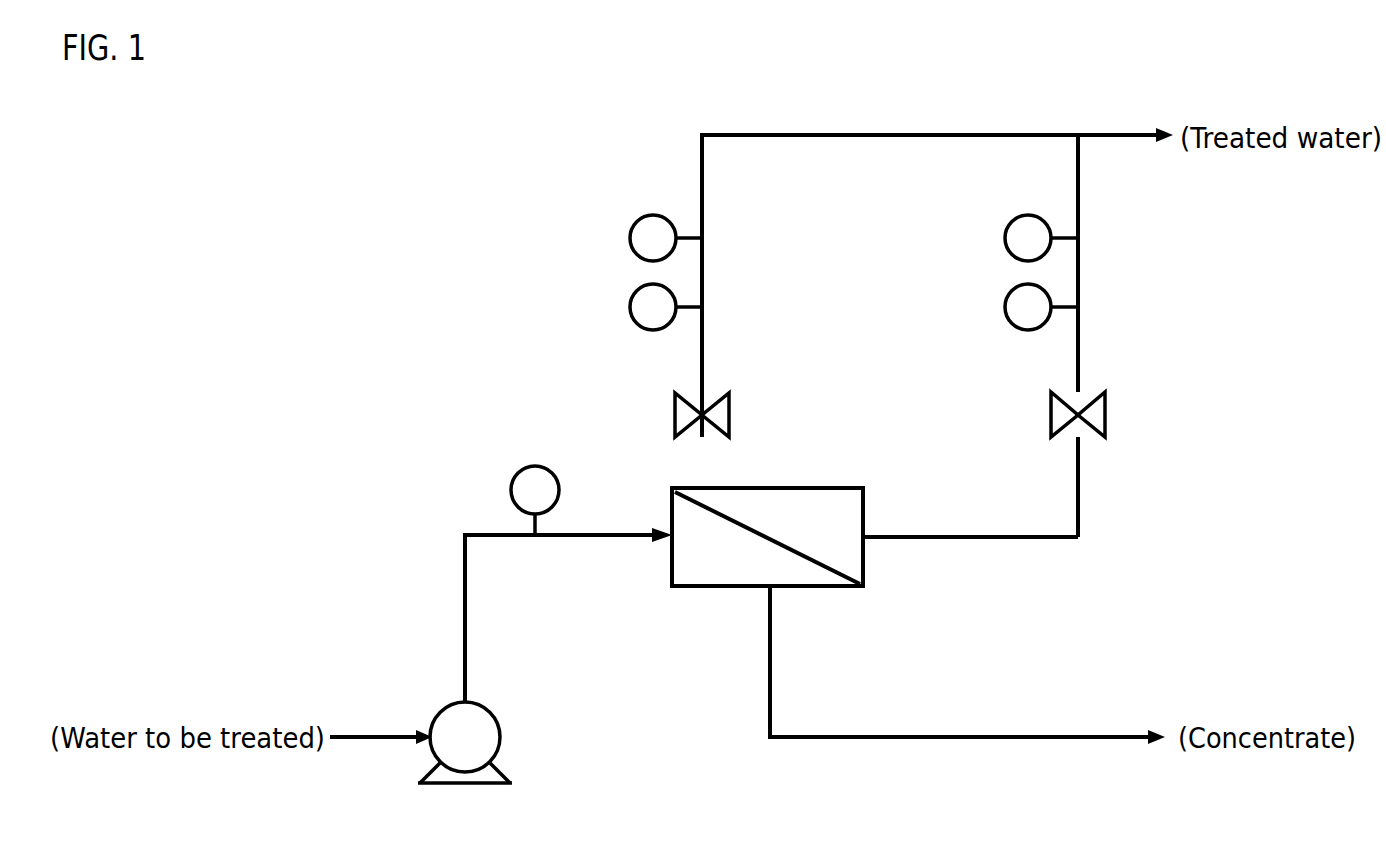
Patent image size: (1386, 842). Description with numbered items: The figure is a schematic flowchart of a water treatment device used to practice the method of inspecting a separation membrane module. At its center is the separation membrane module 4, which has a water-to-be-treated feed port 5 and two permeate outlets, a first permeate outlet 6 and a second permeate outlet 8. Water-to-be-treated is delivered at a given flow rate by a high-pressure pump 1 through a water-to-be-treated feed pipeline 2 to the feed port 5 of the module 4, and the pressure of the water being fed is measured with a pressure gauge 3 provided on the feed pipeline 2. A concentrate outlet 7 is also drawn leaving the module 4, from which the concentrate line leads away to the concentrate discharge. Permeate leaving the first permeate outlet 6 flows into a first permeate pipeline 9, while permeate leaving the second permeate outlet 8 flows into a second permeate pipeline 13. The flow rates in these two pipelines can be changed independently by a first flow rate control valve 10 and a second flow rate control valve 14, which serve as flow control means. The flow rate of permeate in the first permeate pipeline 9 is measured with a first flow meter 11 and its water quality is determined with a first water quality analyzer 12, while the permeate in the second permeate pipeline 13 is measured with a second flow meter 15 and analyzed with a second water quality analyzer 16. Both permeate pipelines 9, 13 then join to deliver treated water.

The high-pressure pump 1 is at (462, 734).
The water-to-be-treated feed pipeline 2 is at (463, 630).
The pressure gauge 3 is at (513, 478).
The separation membrane module 4 is at (752, 502).
The water-to-be-treated feed port 5 is at (658, 518).
The first permeate outlet 6 is at (712, 484).
The concentrate outlet 7 is at (765, 584).
The second permeate outlet 8 is at (868, 542).
The first permeate pipeline 9 is at (708, 372).
The first flow rate control valve 10 is at (680, 428).
The first flow meter 11 is at (630, 312).
The first water quality analyzer 12 is at (630, 234).
The second permeate pipeline 13 is at (1083, 505).
The second flow rate control valve 14 is at (1100, 402).
The second flow meter 15 is at (1005, 313).
The second water quality analyzer 16 is at (1005, 234).